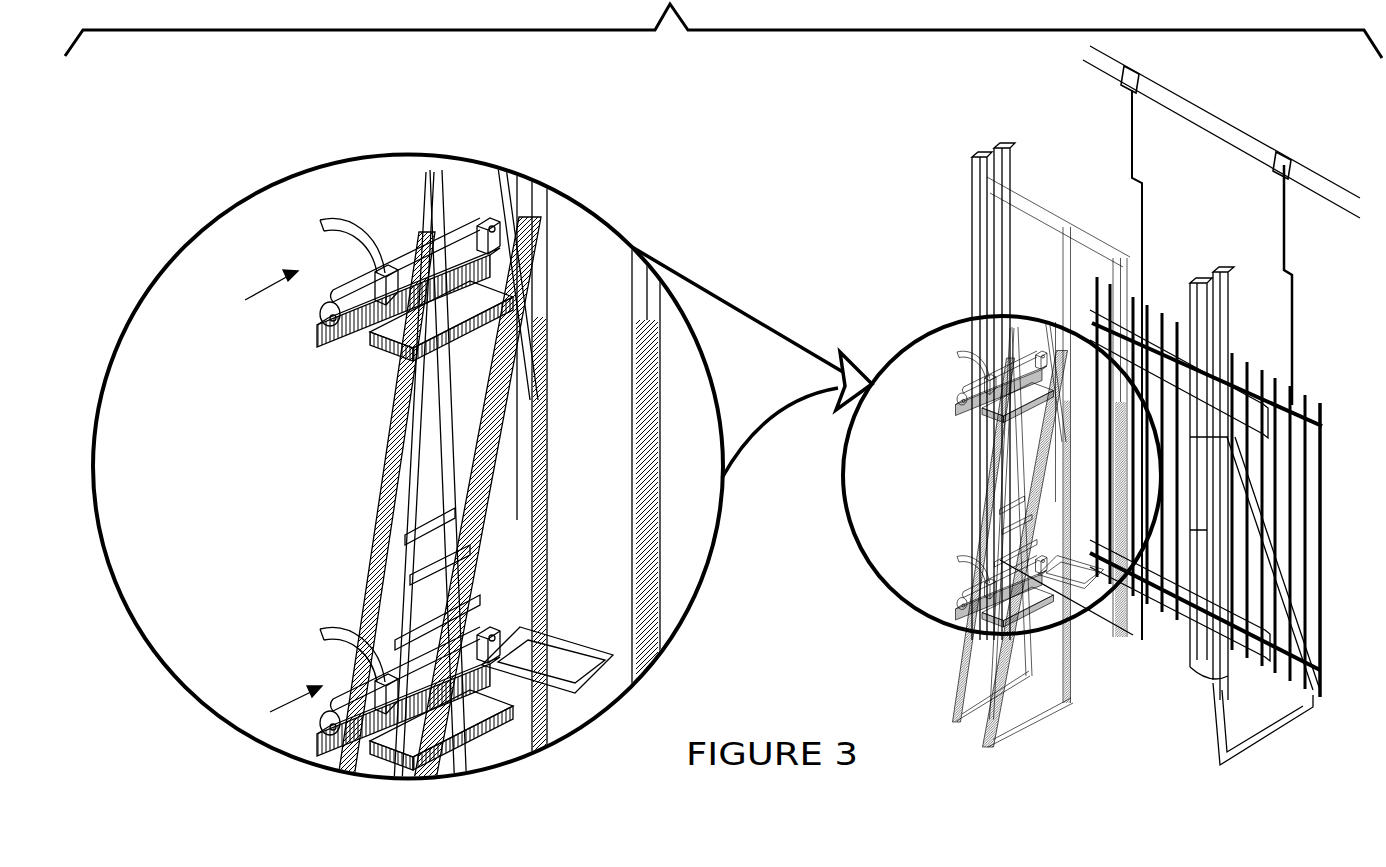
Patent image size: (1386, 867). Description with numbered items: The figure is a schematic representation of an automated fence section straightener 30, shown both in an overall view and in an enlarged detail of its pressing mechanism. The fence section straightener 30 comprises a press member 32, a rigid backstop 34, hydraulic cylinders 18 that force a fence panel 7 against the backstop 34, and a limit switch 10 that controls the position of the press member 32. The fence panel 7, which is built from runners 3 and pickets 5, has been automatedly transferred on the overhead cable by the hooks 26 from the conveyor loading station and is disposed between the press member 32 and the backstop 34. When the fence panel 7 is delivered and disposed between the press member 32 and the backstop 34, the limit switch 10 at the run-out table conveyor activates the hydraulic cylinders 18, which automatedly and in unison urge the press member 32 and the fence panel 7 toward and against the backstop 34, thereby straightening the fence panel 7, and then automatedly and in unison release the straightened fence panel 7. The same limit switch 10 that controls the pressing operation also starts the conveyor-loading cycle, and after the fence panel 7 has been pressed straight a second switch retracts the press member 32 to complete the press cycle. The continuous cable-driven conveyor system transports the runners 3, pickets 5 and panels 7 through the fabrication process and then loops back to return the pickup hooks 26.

The runners 3 is at (1272, 640).
The pickets 5 is at (1322, 404).
The fence panel 7 is at (1328, 494).
The limit switch 10 is at (348, 147).
The hydraulic cylinders 18 is at (372, 340).
The hooks 26 is at (1293, 282).
The automated fence section straightener 30 is at (485, 144).
The press member 32 is at (538, 690).
The rigid backstop 34 is at (657, 580).